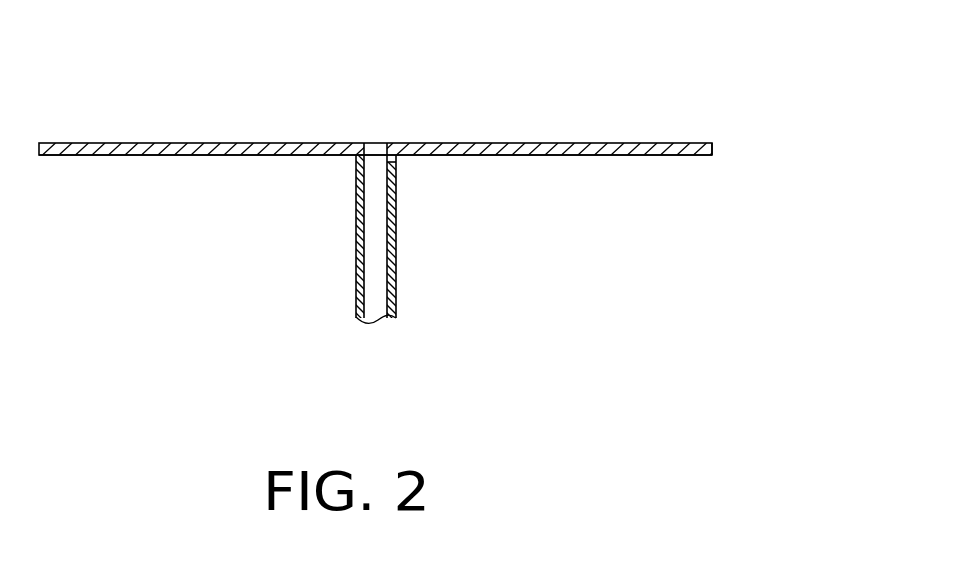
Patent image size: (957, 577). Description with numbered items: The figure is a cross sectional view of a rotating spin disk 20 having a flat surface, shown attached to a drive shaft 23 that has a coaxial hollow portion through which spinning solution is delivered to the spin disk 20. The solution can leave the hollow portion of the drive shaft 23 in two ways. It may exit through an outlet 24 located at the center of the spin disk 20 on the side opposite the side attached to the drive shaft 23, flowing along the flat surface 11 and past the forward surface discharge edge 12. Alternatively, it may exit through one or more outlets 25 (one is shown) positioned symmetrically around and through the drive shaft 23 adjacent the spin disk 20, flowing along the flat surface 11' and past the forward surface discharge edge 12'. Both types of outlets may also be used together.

The spin disk 20 is at (146, 125).
The flat surface 11 is at (374, 127).
The flat surface 11' is at (375, 176).
The forward surface discharge edge 12 is at (745, 125).
The forward surface discharge edge 12' is at (748, 173).
The outlet 24 is at (377, 148).
The drive shaft 23 is at (396, 268).
The outlet 25 is at (396, 162).